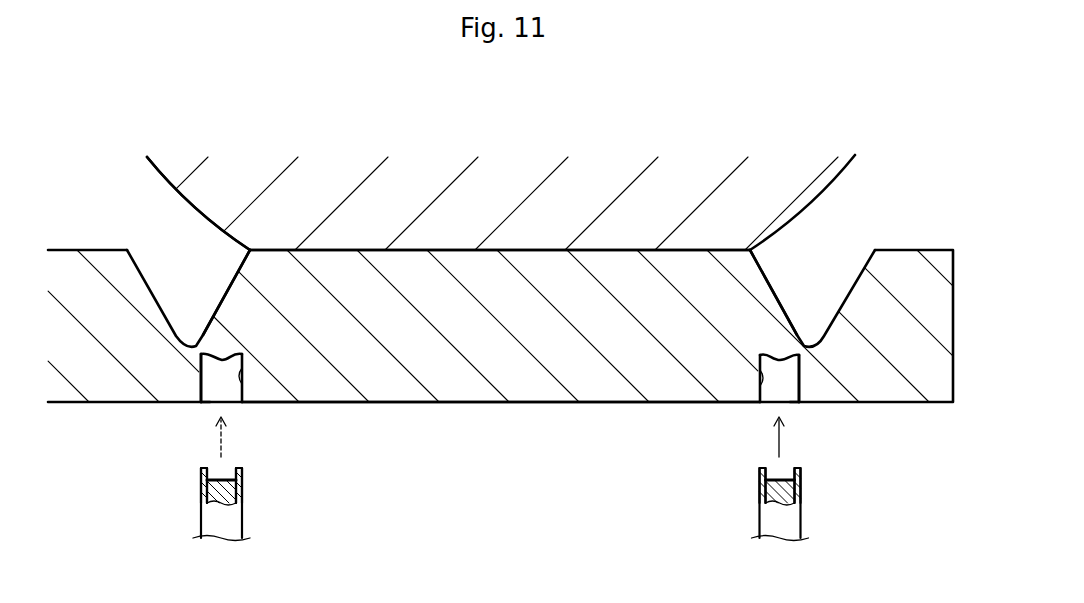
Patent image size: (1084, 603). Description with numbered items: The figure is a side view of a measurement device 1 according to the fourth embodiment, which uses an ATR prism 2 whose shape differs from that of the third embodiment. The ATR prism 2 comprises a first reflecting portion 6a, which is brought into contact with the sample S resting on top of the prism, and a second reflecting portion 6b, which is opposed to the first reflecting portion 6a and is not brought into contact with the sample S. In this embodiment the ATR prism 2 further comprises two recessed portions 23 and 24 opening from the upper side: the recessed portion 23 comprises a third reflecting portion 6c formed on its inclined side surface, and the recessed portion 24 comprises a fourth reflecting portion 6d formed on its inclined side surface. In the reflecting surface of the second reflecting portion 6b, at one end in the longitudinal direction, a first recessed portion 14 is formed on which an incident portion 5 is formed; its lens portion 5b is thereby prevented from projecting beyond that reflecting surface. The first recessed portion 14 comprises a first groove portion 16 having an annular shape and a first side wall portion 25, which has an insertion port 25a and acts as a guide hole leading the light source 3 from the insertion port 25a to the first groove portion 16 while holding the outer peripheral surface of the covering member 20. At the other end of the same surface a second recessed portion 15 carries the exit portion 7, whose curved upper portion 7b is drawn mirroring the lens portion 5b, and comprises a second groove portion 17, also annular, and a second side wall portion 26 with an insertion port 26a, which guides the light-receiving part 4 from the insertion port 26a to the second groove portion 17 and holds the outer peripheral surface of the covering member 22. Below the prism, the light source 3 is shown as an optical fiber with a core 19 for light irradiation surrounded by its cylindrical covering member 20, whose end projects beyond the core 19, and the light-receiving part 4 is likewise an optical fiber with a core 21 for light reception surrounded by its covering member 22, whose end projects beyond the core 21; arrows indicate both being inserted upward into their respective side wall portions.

The measurement device 1 is at (717, 150).
The sample S is at (132, 183).
The ATR prism 2 is at (939, 243).
The first reflecting portion 6a is at (458, 250).
The second reflecting portion 6b is at (463, 403).
The recessed portion 23 is at (157, 269).
The third reflecting portion 6c is at (223, 298).
The recessed portion 24 is at (846, 272).
The fourth reflecting portion 6d is at (778, 300).
The incident portion 5 is at (193, 393).
The lens portion 5b is at (231, 357).
The first groove portion 16 is at (201, 367).
The first side wall portion 25 is at (244, 375).
The insertion port 25a is at (239, 405).
The first recessed portion 14 is at (214, 413).
The exit portion 7 is at (808, 393).
The hole top wall 7b is at (760, 363).
The second groove portion 17 is at (801, 360).
The second side wall portion 26 is at (759, 378).
The insertion port 26a is at (762, 405).
The second recessed portion 15 is at (795, 411).
The light source 3 is at (212, 504).
The covering member 20 is at (203, 487).
The core 19 is at (241, 488).
The light-receiving part 4 is at (789, 504).
The core 21 is at (762, 487).
The covering member 22 is at (800, 488).